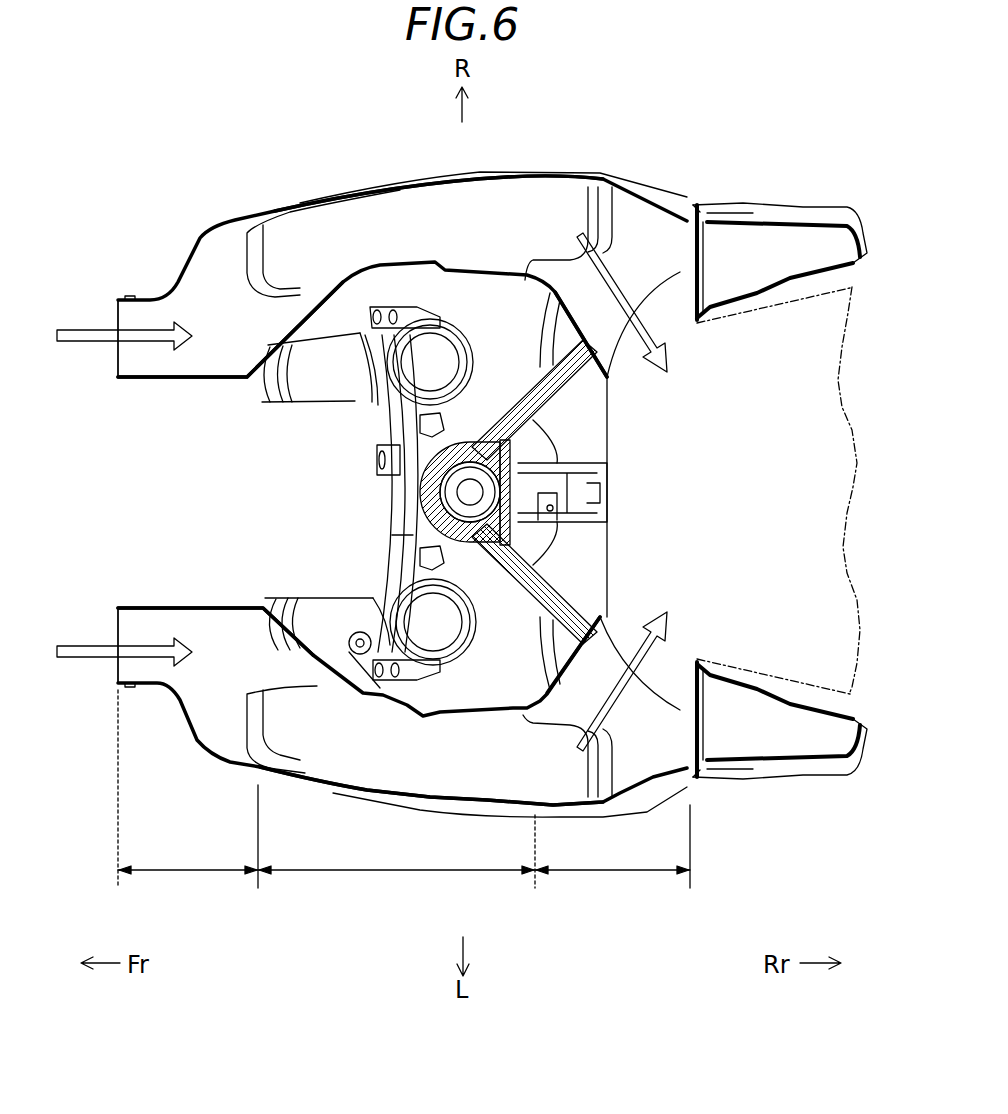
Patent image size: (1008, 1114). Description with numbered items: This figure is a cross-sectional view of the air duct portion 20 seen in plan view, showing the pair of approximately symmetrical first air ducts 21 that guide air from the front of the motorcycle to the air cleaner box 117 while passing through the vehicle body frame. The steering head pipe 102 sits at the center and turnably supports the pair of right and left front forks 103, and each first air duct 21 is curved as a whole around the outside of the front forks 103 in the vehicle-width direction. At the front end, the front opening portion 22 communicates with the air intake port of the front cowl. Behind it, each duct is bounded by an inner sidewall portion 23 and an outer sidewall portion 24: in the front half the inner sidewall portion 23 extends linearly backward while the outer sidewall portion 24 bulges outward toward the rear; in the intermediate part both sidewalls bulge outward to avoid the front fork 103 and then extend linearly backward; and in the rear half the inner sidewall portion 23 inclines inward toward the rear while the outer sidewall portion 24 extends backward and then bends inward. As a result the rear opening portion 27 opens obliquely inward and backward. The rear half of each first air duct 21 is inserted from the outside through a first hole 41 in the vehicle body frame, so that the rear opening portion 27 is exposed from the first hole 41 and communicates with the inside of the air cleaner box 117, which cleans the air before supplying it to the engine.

The air duct portion 20 is at (108, 210).
The first air duct 21 is at (187, 238).
The front opening portion 22 is at (115, 365).
The inner sidewall portion 23 is at (197, 383).
The outer sidewall portion 24 is at (325, 203).
The rear opening portion 27 is at (620, 370).
The first hole 41 is at (670, 266).
The steering head pipe 102 is at (425, 489).
The front fork 103 is at (291, 403).
The air cleaner box 117 is at (775, 300).